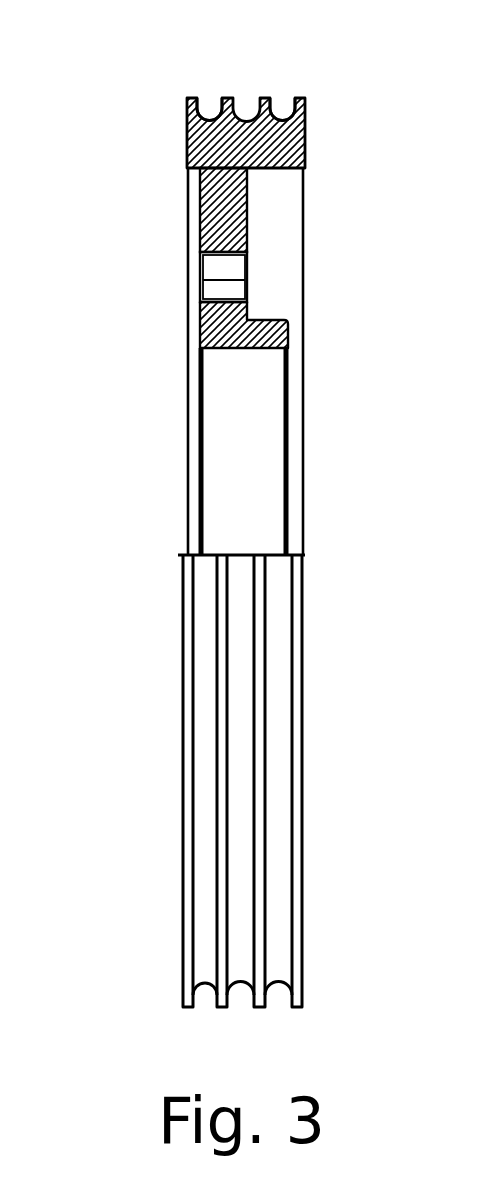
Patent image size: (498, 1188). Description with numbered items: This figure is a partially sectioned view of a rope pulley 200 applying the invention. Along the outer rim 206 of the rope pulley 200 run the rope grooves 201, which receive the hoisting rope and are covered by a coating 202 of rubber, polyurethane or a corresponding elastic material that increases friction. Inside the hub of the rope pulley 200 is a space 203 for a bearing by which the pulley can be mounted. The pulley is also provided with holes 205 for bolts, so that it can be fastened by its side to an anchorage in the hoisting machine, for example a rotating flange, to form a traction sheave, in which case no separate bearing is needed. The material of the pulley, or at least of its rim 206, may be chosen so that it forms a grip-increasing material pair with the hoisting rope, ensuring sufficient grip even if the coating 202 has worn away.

The rope pulley 200 is at (198, 790).
The rope grooves 201 is at (283, 102).
The coating 202 is at (192, 101).
The space for a bearing 203 is at (223, 463).
The holes for bolts 205 is at (222, 276).
The rim 206 is at (188, 150).